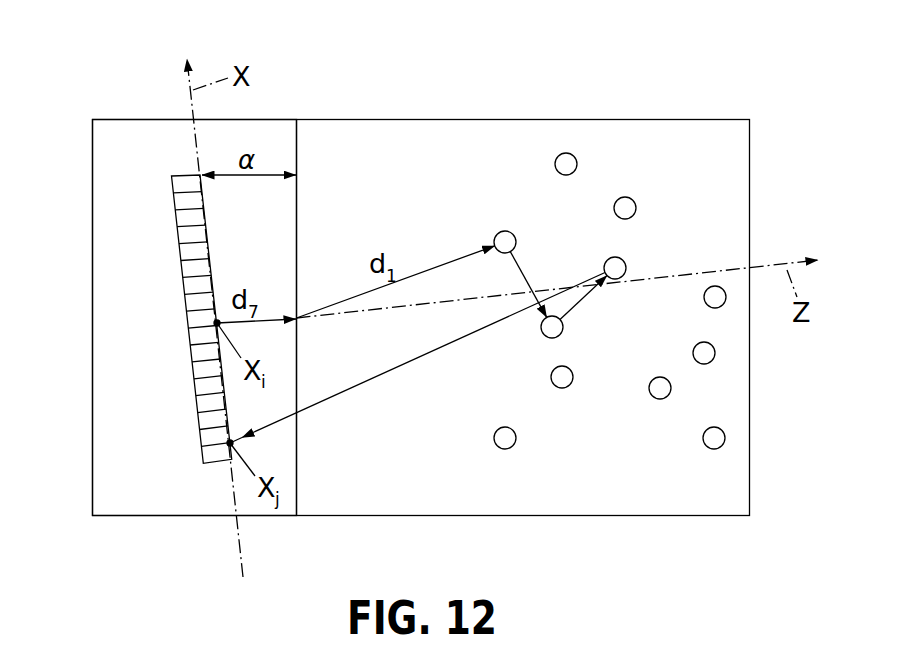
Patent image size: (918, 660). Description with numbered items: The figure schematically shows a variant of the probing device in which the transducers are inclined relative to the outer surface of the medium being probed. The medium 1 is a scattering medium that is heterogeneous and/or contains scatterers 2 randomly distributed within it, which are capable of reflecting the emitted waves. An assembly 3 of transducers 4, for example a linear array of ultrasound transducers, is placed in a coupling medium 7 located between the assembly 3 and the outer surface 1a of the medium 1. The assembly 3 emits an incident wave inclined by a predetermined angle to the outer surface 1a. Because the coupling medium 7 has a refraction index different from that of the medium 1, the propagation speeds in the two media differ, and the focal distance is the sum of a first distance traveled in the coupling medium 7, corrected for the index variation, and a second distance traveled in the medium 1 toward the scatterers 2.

The medium 1 is at (692, 133).
The outer surface 1a is at (296, 482).
The scatterers 2 is at (626, 266).
The assembly of transducers 3 is at (198, 472).
The transducers 4 is at (205, 407).
The coupling medium 7 is at (132, 134).